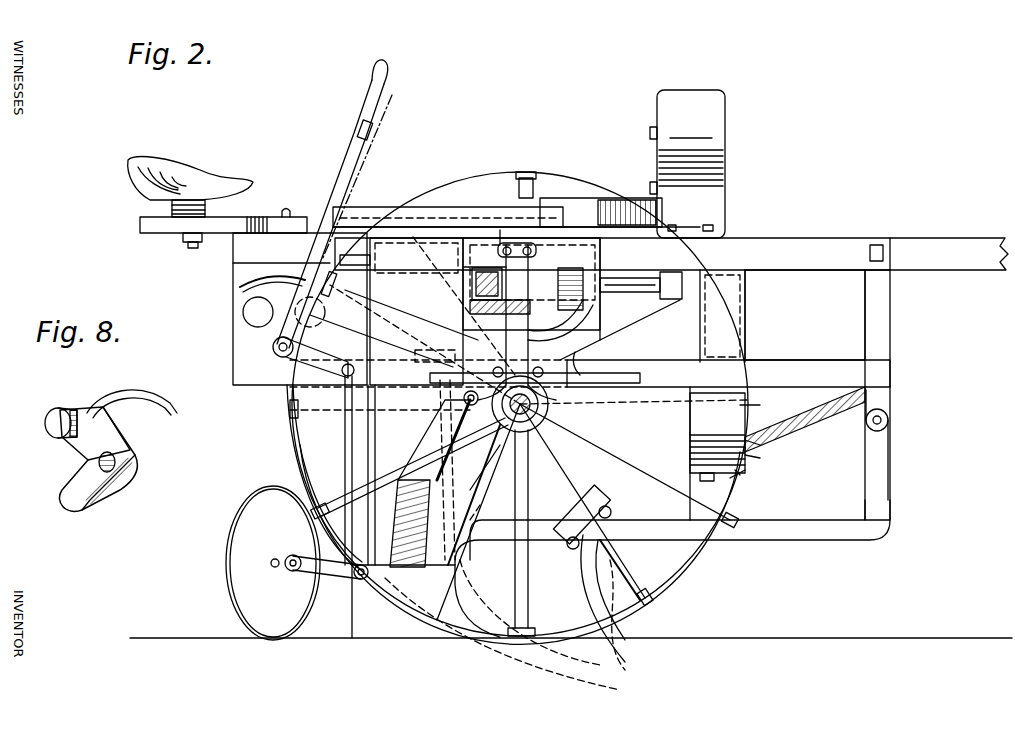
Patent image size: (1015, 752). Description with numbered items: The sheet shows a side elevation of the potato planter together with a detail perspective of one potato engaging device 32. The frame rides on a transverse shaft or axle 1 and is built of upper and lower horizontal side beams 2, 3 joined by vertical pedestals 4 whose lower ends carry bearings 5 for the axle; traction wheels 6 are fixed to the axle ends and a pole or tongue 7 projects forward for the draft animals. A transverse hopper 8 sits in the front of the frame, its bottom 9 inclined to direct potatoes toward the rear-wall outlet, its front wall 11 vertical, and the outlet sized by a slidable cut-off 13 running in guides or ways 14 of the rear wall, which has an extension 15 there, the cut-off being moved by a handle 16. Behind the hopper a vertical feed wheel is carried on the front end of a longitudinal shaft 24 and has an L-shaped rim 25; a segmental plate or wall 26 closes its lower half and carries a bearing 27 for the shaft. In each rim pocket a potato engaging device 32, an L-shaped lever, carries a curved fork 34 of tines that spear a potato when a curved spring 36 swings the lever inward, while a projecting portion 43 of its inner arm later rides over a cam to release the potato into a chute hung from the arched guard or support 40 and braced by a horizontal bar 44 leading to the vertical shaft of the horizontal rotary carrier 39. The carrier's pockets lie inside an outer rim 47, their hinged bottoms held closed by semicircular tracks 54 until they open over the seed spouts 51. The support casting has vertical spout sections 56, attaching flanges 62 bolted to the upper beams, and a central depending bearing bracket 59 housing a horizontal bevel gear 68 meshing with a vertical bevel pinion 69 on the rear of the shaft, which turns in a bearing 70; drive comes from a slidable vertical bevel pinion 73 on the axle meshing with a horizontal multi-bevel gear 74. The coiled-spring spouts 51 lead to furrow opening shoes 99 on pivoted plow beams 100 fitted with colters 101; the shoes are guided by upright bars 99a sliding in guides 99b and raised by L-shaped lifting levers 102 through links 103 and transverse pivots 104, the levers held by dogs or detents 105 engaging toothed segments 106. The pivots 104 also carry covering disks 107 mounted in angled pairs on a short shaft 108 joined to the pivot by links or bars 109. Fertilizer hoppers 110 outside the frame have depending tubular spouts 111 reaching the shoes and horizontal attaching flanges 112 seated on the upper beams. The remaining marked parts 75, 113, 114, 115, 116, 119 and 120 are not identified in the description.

In FIG. 2, the transverse shaft or axle 1 is at (530, 455).
In FIG. 2, the upper horizontal side beams 2 is at (612, 254).
In FIG. 2, the lower horizontal side beams 3 is at (590, 373).
In FIG. 2, the vertical pedestals 4 is at (543, 262).
In FIG. 2, the bearings 5 is at (565, 420).
In FIG. 2, the traction or supporting wheels 6 is at (710, 572).
In FIG. 2, the pole or tongue 7 is at (949, 254).
In FIG. 2, the hopper 8 is at (805, 315).
In FIG. 2, the hopper bottom 9 is at (800, 420).
In FIG. 2, the front wall of hopper 11 is at (867, 328).
In FIG. 2, the slidable cut-off 13 is at (760, 405).
In FIG. 2, the horizontal guides or ways 14 is at (760, 458).
In FIG. 2, the extension 15 is at (760, 445).
In FIG. 2, the handle 16 is at (790, 455).
In FIG. 2, the longitudinal shaft 24 is at (640, 295).
In FIG. 2, the feed wheel rim 25 is at (742, 478).
In FIG. 2, the segmental plate or wall 26 is at (680, 438).
In FIG. 2, the bearing 27 is at (672, 272).
In FIG. 2, the potato engaging device 32 is at (611, 542).
In FIG. 8, the potato engaging device 32 is at (102, 459).
In FIG. 8, the curved fork 34 is at (172, 404).
In FIG. 2, the curved spring 36 is at (717, 453).
In FIG. 2, the horizontal rotary carrier 39 is at (437, 210).
In FIG. 2, the arched guard or support 40 is at (687, 164).
In FIG. 8, the projecting portion 43 is at (58, 426).
In FIG. 2, the horizontal bar 44 is at (575, 198).
In FIG. 2, the outer rim 47 is at (375, 237).
In FIG. 2, the seed spouts 51 is at (505, 490).
In FIG. 2, the semicircular tracks 54 is at (470, 235).
In FIG. 2, the vertical spout sections 56 is at (531, 284).
In FIG. 2, the central depending bearing bracket 59 is at (574, 327).
In FIG. 2, the terminal attaching flanges 62 is at (528, 178).
In FIG. 2, the horizontal bevel gear 68 is at (470, 307).
In FIG. 2, the vertical bevel pinion 69 is at (575, 300).
In FIG. 2, the bearing 70 is at (640, 340).
In FIG. 2, the vertical bevel pinion 73 is at (580, 448).
In FIG. 2, the horizontal multi-bevel gear 74 is at (630, 383).
In FIG. 2, the hook 75 is at (580, 365).
In FIG. 2, the furrow opening shoes 99 is at (504, 625).
In FIG. 2, the upright bars or members 99a is at (360, 443).
In FIG. 2, the guides 99b is at (370, 260).
In FIG. 2, the plow beams 100 is at (808, 532).
In FIG. 2, the colters 101 is at (583, 597).
In FIG. 2, the lifting levers 102 is at (338, 183).
In FIG. 2, the links or rods 103 is at (345, 462).
In FIG. 2, the short transverse rods or pivots 104 is at (366, 578).
In FIG. 2, the dogs or detents 105 is at (338, 292).
In FIG. 2, the toothed segments 106 is at (245, 286).
In FIG. 2, the covering disks 107 is at (273, 563).
In FIG. 2, the short shaft 108 is at (273, 570).
In FIG. 2, the links or bars 109 is at (336, 568).
In FIG. 2, the fertilizer hoppers or containers 110 is at (425, 375).
In FIG. 2, the depending tubular portions or spouts 111 is at (430, 483).
In FIG. 2, the horizontal attaching flanges 112 is at (410, 237).
In FIG. 2, the brace 113 is at (457, 445).
In FIG. 2, the rod 114 is at (380, 405).
In FIG. 2, the bracket 115 is at (415, 355).
In FIG. 2, the rod 116 is at (450, 432).
In FIG. 2, the pivot 119 is at (464, 395).
In FIG. 2, the arm 120 is at (498, 469).